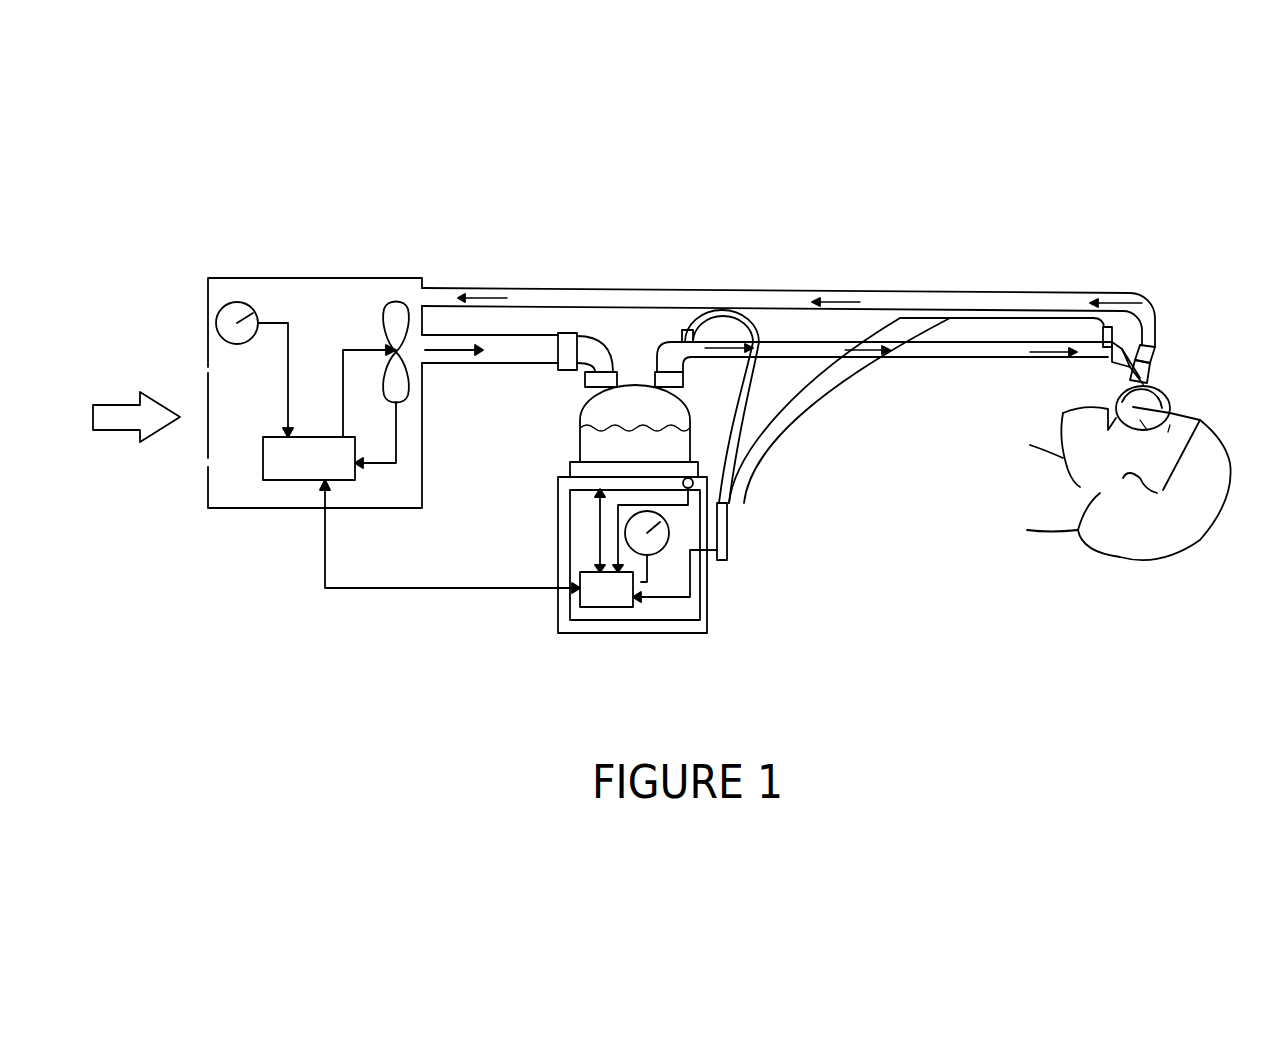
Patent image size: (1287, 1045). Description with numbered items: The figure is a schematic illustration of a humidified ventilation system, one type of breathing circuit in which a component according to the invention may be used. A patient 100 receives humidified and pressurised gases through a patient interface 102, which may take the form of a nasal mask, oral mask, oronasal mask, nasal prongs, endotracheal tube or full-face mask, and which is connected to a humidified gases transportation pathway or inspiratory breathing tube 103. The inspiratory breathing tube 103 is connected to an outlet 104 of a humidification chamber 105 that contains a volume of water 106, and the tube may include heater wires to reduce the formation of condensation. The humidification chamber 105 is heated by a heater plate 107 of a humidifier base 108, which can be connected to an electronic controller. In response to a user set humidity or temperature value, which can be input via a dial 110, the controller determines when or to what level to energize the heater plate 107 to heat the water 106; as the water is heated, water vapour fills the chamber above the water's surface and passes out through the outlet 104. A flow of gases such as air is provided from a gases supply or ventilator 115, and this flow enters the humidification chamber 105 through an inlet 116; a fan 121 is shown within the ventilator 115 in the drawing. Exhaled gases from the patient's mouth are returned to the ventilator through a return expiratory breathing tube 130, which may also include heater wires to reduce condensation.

The patient 100 is at (1107, 557).
The patient interface 102 is at (1173, 402).
The inspiratory breathing tube 103 is at (917, 358).
The outlet 104 is at (657, 368).
The humidification chamber 105 is at (582, 420).
The water 106 is at (635, 443).
The heater plate 107 is at (570, 465).
The humidifier base 108 is at (550, 538).
The dial 110 is at (657, 553).
The gases supply or ventilator 115 is at (320, 277).
The inlet 116 is at (588, 383).
The fan 121 is at (400, 300).
The expiratory breathing tube 130 is at (791, 291).